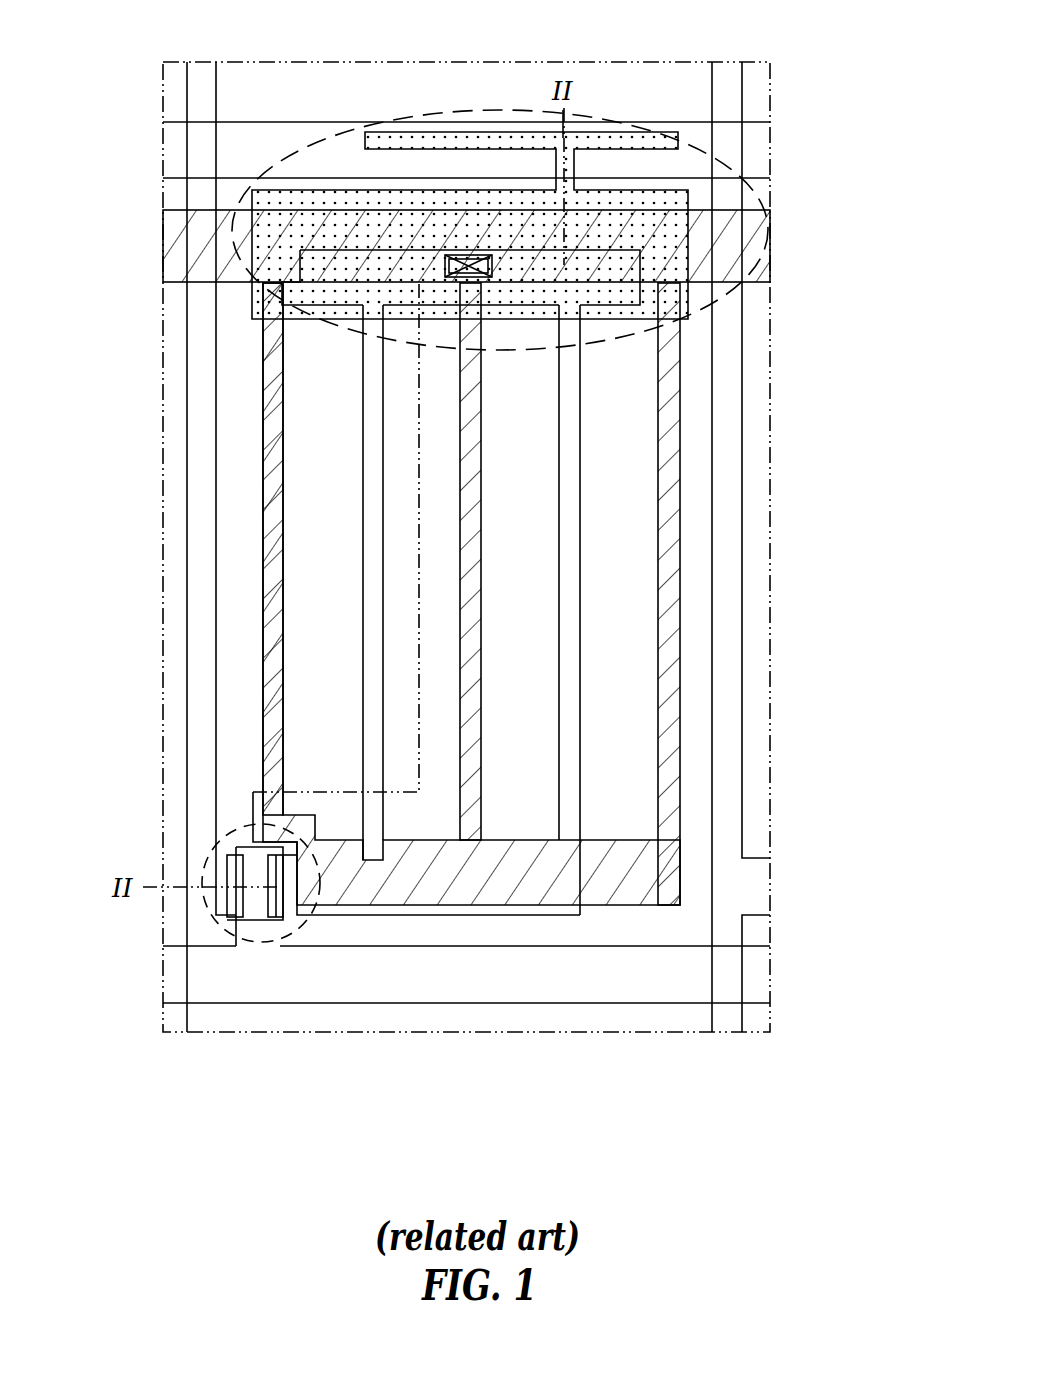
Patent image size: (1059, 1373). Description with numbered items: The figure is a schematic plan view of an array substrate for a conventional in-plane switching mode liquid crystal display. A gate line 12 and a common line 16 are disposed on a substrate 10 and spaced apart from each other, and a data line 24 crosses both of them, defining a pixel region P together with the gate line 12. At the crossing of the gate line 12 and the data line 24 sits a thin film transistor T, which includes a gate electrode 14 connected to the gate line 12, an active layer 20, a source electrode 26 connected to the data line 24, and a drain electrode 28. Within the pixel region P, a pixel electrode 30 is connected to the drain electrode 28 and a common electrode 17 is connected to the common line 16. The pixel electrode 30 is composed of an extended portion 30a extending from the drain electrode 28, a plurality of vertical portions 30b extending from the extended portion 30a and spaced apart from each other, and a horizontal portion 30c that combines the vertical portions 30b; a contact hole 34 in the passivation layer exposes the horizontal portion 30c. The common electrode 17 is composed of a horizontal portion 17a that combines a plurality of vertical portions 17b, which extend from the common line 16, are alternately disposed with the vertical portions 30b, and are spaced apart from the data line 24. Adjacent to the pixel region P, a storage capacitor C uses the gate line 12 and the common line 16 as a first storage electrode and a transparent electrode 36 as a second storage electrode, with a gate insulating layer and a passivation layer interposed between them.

The substrate 10 is at (770, 600).
The gate line 12 is at (488, 124).
The gate electrode 14 is at (232, 990).
The common line 16 is at (720, 208).
The common electrode 17 is at (484, 702).
The horizontal portion 17a is at (622, 860).
The vertical portions 17b is at (668, 820).
The active layer 20 is at (225, 847).
The data line 24 is at (196, 600).
The source electrode 26 is at (232, 867).
The drain electrode 28 is at (275, 917).
The pixel electrode 30 is at (416, 718).
The extended portion 30a is at (470, 912).
The vertical portions 30b is at (573, 800).
The horizontal portion 30c is at (700, 217).
The contact hole 34 is at (466, 280).
The transparent electrode 36 is at (738, 183).
The storage capacitor C is at (522, 352).
The pixel region P is at (742, 417).
The thin film transistor T is at (255, 947).